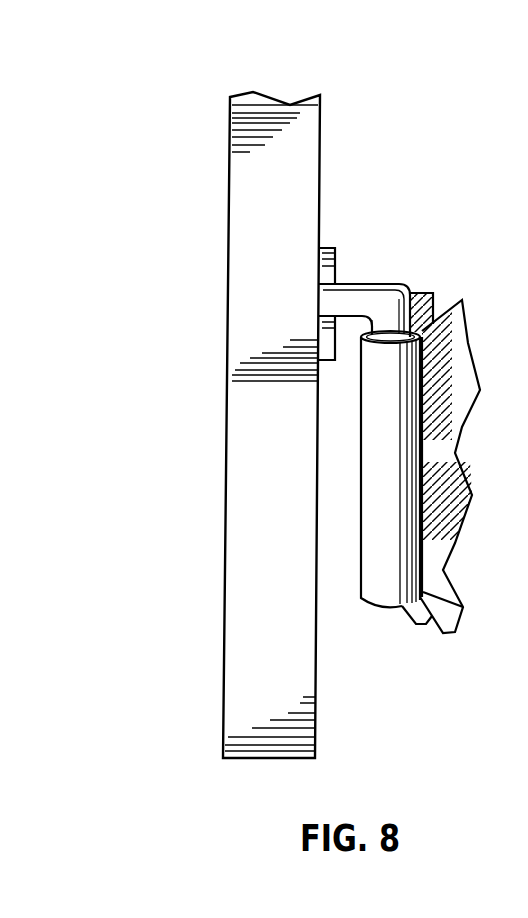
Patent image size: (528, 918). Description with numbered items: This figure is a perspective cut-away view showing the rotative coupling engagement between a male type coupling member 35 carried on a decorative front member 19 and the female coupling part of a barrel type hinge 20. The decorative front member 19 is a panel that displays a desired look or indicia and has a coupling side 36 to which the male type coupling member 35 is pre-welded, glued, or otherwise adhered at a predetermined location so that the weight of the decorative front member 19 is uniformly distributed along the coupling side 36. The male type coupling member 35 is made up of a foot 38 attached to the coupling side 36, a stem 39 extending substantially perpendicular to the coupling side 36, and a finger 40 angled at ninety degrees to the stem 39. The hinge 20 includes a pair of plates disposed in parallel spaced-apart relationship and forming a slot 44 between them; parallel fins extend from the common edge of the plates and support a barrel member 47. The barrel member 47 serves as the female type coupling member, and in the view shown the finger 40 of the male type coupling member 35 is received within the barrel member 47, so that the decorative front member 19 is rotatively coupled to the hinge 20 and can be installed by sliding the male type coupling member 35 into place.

The decorative front member 19 is at (342, 118).
The barrel type hinge 20 is at (423, 638).
The male type coupling member 35 is at (392, 299).
The coupling side 36 is at (247, 303).
The foot 38 is at (328, 247).
The stem 39 is at (357, 298).
The finger 40 is at (390, 318).
The slot 44 is at (440, 297).
The barrel member 47 is at (387, 447).